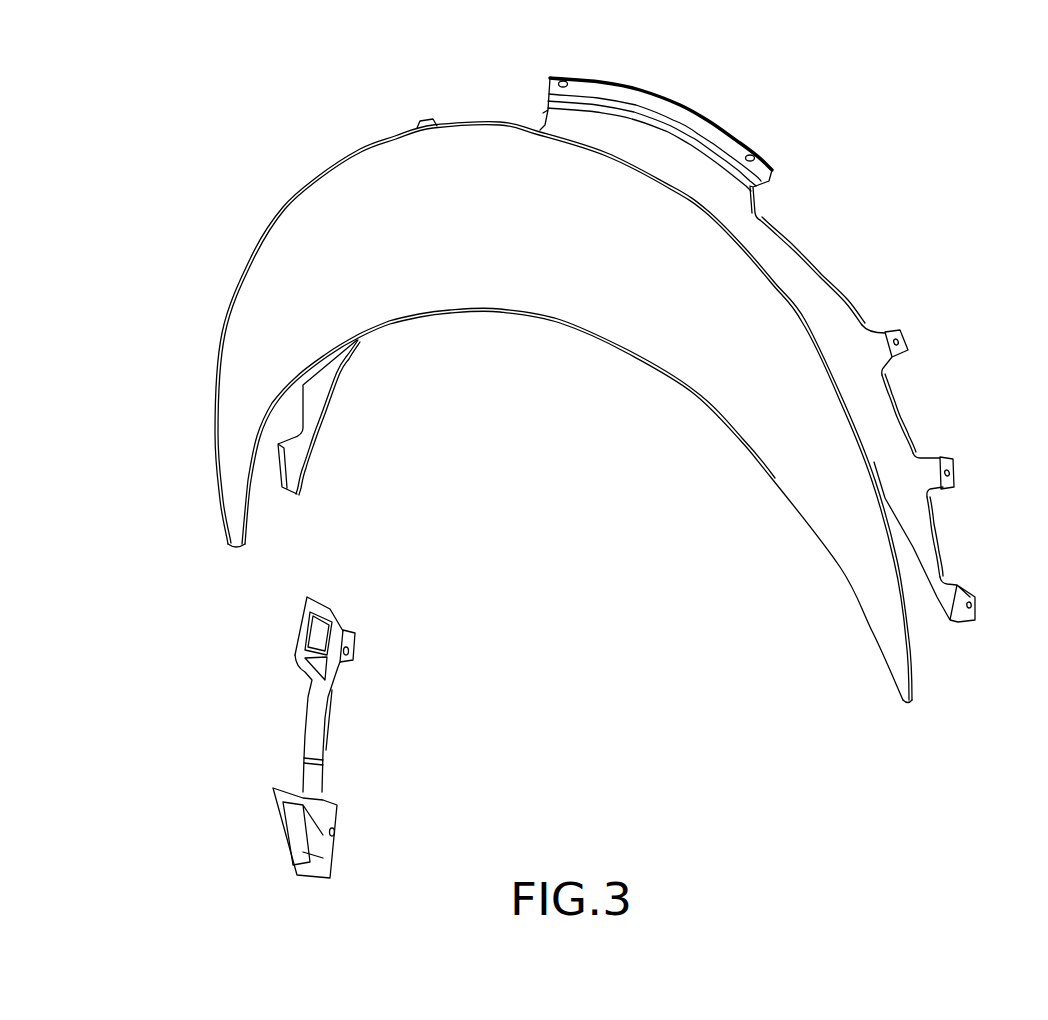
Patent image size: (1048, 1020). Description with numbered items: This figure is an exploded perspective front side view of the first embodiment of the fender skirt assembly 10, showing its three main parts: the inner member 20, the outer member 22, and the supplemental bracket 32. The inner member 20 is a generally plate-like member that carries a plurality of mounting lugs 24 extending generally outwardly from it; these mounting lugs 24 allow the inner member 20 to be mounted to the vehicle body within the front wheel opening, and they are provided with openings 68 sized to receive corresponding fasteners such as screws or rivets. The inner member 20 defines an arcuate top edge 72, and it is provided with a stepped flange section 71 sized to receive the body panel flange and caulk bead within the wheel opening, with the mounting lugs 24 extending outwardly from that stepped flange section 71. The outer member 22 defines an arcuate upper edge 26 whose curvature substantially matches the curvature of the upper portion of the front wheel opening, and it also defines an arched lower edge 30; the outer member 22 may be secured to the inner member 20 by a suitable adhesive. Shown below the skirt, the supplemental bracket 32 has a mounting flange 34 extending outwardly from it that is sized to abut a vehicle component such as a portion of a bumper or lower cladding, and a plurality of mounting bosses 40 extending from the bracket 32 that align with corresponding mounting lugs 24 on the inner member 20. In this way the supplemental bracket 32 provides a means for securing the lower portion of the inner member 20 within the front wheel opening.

The fender skirt assembly 10 is at (158, 165).
The inner member 20 is at (820, 258).
The outer member 22 is at (214, 332).
The mounting lugs 24 is at (418, 123).
The arcuate upper edge 26 is at (251, 257).
The arched lower edge 30 is at (767, 460).
The supplemental bracket 32 is at (298, 710).
The mounting flange 34 is at (277, 792).
The mounting bosses 40 is at (330, 818).
The openings 68 is at (565, 82).
The stepped flange section 71 is at (768, 175).
The arcuate top edge 72 is at (845, 302).